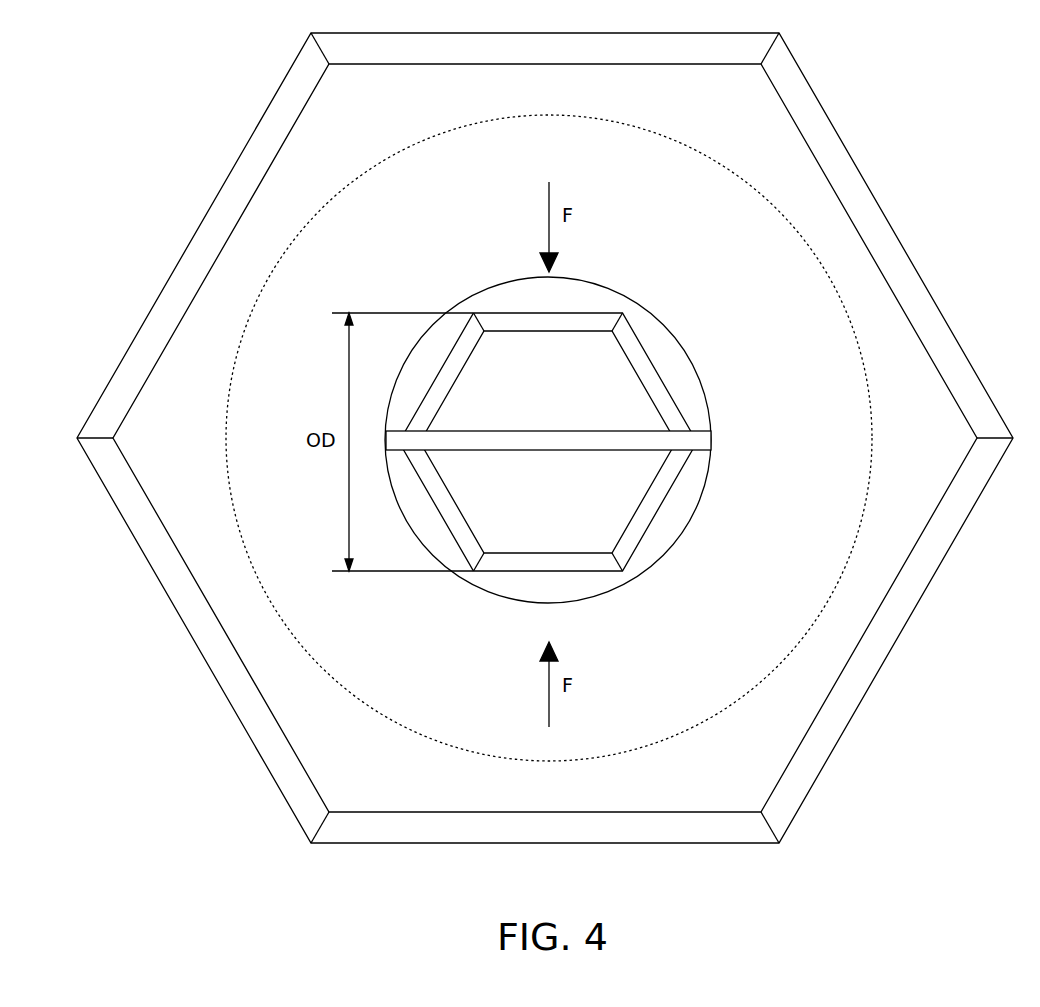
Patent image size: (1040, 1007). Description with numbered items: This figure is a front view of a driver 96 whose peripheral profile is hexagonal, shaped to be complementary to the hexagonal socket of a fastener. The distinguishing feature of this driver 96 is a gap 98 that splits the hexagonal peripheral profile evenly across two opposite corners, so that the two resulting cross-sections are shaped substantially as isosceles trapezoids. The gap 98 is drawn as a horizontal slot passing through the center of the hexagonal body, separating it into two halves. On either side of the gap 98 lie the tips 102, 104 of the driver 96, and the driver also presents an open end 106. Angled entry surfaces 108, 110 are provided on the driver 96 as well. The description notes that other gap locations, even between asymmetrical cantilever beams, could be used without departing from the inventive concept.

The driver 96 is at (134, 147).
The gap 98 is at (712, 440).
The tip 102 is at (592, 492).
The tip 104 is at (622, 390).
The open end 106 is at (560, 430).
The angled entry surface 108 is at (499, 565).
The angled entry surface 110 is at (533, 312).